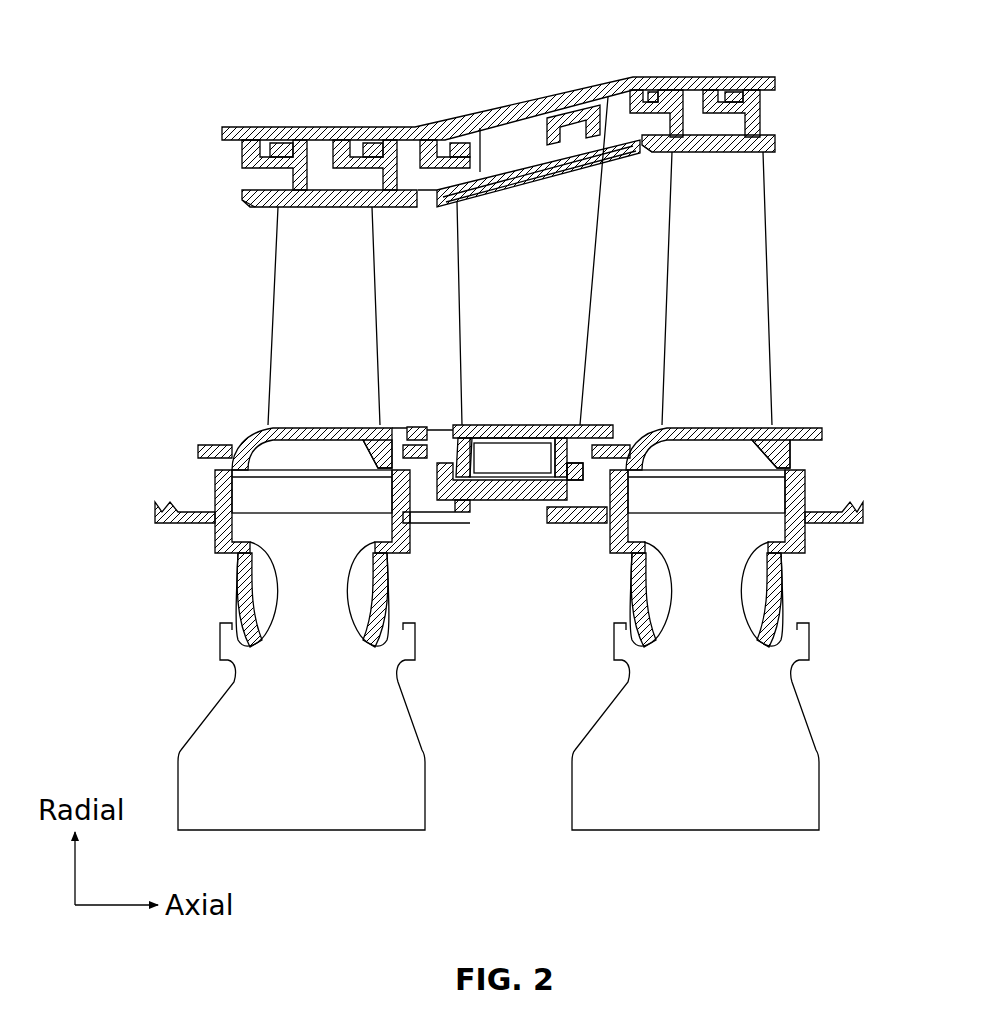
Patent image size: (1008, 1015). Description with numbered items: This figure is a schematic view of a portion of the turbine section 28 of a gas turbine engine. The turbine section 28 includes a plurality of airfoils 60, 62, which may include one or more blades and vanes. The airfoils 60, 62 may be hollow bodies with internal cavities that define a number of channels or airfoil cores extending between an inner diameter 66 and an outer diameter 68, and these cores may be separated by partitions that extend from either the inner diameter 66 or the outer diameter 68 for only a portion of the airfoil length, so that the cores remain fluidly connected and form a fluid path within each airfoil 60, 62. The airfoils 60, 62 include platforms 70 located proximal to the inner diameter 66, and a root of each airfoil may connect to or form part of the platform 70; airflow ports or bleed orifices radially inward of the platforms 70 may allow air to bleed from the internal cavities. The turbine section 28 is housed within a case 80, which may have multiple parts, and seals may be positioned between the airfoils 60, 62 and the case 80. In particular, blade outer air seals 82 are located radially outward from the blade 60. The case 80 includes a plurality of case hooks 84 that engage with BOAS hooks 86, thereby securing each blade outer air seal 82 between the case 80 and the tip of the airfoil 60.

The turbine section 28 is at (222, 45).
The airfoil 60 is at (370, 325).
The airfoil 62 is at (588, 257).
The inner diameter 66 is at (829, 430).
The outer diameter 68 is at (262, 214).
The platform 70 is at (597, 422).
The case 80 is at (517, 103).
The blade outer air seal 82 is at (395, 203).
The case hook 84 is at (332, 140).
The BOAS hook 86 is at (283, 143).